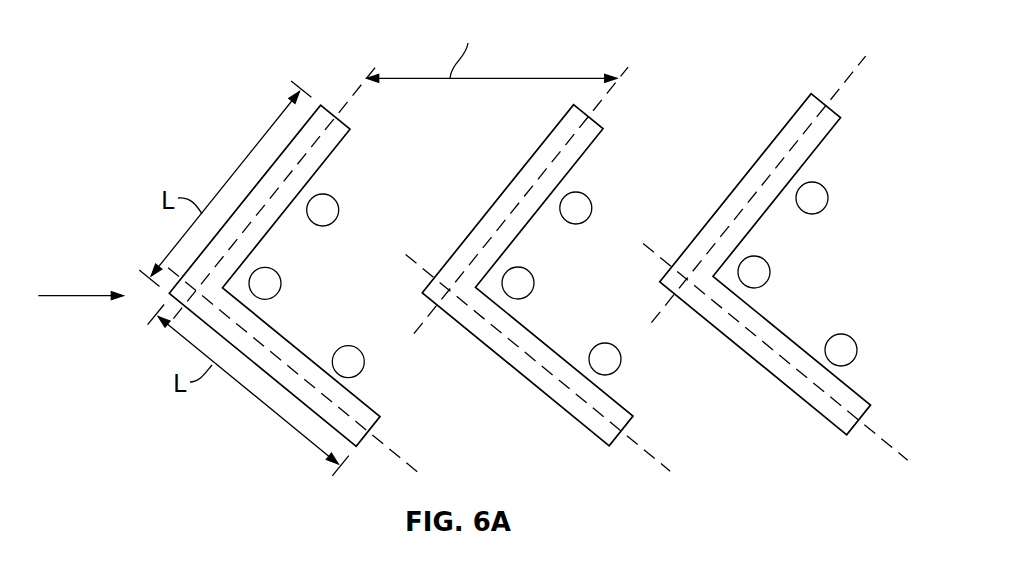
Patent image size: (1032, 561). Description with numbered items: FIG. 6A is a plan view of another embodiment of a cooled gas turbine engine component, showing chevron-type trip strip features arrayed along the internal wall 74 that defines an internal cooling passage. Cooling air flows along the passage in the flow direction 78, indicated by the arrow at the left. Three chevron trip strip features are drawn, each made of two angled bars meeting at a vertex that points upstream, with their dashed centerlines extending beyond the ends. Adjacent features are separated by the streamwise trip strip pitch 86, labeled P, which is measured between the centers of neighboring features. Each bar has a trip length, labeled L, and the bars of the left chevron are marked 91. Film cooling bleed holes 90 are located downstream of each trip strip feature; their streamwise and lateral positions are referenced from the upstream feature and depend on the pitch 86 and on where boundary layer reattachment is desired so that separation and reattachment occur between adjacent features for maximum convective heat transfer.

The internal wall 74 is at (613, 270).
The flow direction 78 is at (82, 295).
The trip strip pitch 86 is at (532, 78).
The film cooling bleed holes 90 is at (337, 202).
The chevron arm 91 is at (261, 139).